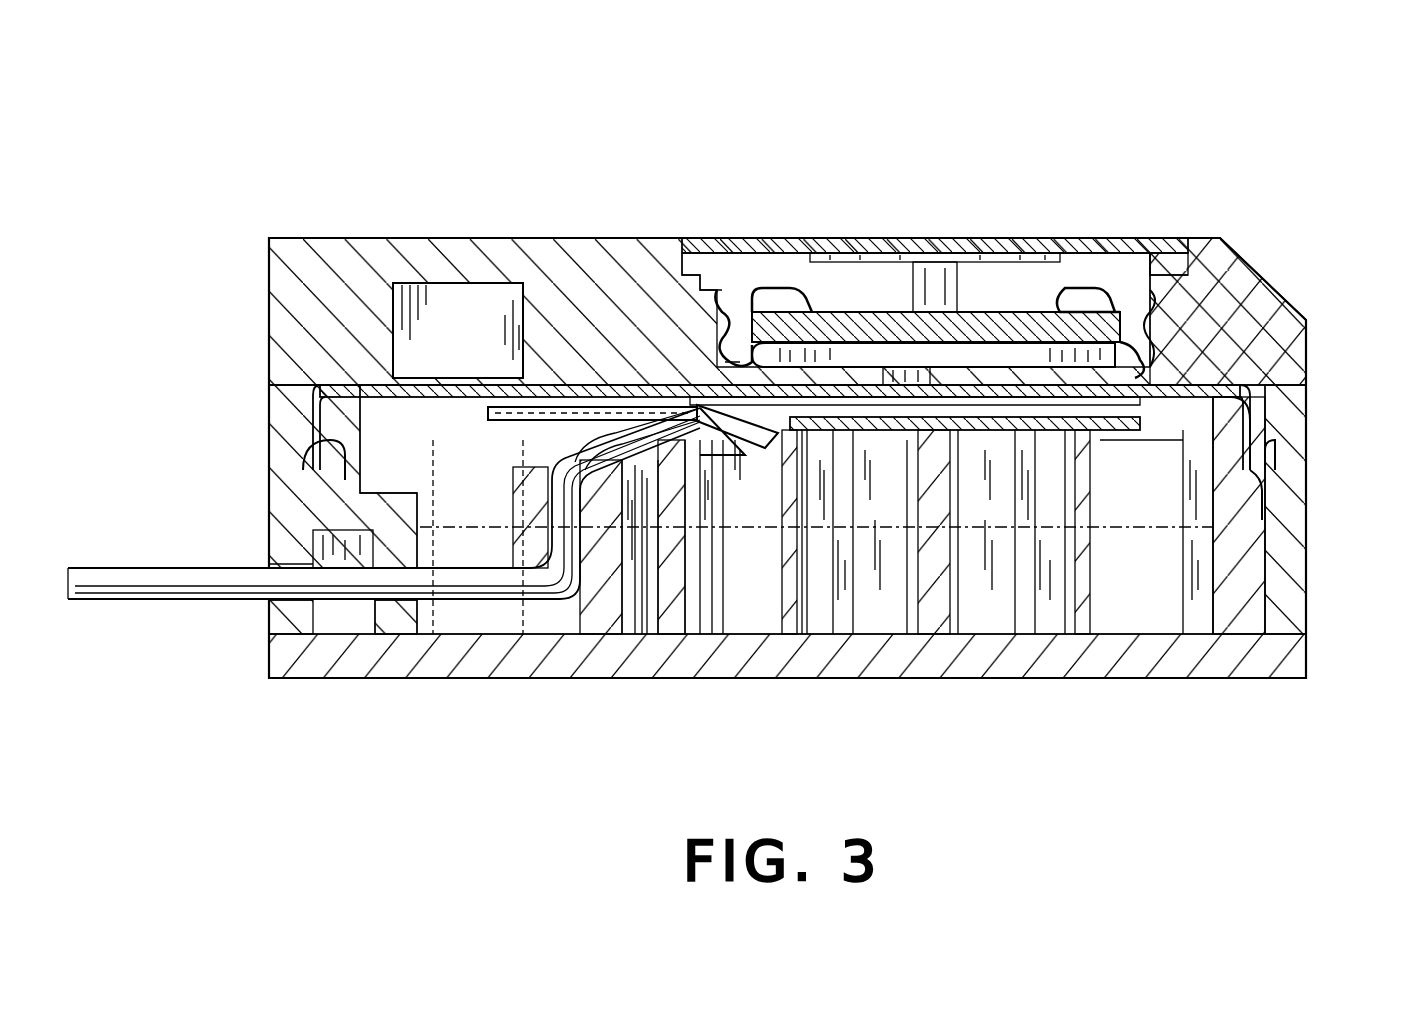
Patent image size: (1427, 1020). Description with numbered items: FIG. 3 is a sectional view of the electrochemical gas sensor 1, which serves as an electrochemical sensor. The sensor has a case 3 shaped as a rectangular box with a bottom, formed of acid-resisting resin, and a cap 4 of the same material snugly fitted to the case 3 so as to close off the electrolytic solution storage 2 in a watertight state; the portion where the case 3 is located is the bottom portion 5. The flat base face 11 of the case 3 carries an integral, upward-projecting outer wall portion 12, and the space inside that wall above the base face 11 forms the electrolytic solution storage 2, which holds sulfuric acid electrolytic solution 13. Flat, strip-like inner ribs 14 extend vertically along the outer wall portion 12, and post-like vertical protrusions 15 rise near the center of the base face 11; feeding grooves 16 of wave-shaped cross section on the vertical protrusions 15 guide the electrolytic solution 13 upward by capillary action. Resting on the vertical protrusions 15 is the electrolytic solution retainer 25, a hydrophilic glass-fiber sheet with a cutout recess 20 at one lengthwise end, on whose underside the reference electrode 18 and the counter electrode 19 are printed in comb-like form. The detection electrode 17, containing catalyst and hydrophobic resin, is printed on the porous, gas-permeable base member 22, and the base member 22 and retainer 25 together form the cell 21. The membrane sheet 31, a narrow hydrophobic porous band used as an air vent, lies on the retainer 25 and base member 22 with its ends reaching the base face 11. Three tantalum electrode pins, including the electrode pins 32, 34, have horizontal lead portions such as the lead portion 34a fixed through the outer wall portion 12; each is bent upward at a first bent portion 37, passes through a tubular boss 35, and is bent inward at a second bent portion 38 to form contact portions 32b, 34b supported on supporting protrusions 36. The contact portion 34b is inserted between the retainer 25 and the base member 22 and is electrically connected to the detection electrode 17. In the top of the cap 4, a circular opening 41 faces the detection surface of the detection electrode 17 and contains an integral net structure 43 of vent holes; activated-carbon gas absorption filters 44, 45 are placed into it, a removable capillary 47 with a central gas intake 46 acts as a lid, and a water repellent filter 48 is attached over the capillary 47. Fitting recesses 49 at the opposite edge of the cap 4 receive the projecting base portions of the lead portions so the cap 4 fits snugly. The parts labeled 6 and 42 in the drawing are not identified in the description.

The electrochemical gas sensor 1 is at (846, 80).
The electrolytic solution storage 2 is at (1270, 587).
The case 3 is at (1280, 508).
The cap 4 is at (1312, 400).
The bottom portion 5 is at (935, 600).
The terminal plate 6 is at (872, 254).
The base face 11 is at (1060, 612).
The outer wall portion 12 is at (1262, 422).
The electrolytic solution 13 is at (1268, 490).
The inner ribs 14 is at (718, 600).
The vertical protrusions 15 is at (806, 600).
The feeding grooves 16 is at (843, 600).
The detection electrode 17 is at (976, 410).
The reference electrode 18 is at (757, 448).
The counter electrode 19 is at (878, 445).
The cutout recess 20 is at (640, 425).
The cell 21 is at (1190, 395).
The base member 22 is at (1262, 392).
The electrolytic solution retainer 25 is at (1147, 445).
The membrane sheet 31 is at (440, 372).
The electrode pin 32 is at (630, 470).
The contact portion 32b is at (640, 500).
The electrode pin 34 is at (92, 600).
The lead portion 34a is at (153, 600).
The contact portion 34b is at (700, 405).
The boss 35 is at (515, 480).
The supporting protrusions 36 is at (655, 475).
The first bent portion 37 is at (585, 540).
The second bent portion 38 is at (555, 440).
The opening 41 is at (1118, 345).
The conductive plate 42 is at (985, 345).
The net structure 43 is at (1045, 335).
The gas absorption filter 44 is at (782, 300).
The gas absorption filter 45 is at (845, 318).
The gas intake 46 is at (916, 290).
The capillary 47 is at (1178, 240).
The water repellent filter 48 is at (722, 238).
The fitting recesses 49 is at (283, 565).